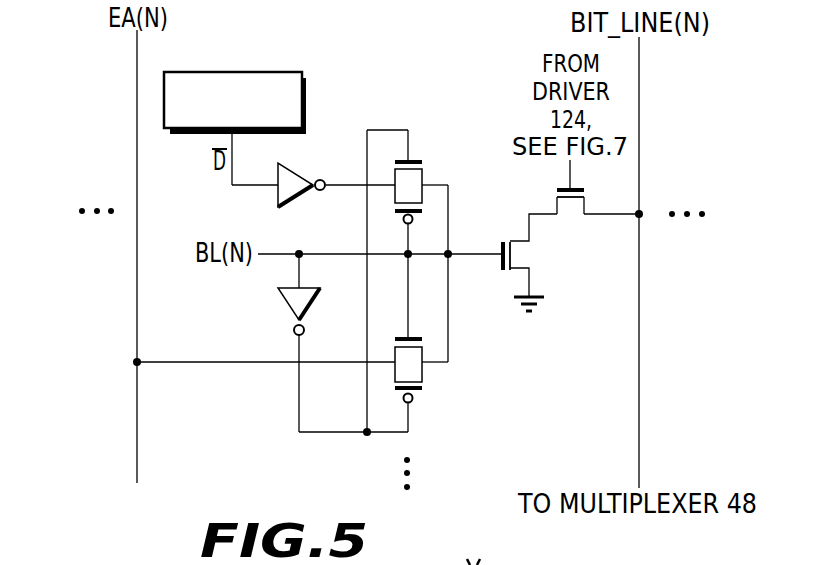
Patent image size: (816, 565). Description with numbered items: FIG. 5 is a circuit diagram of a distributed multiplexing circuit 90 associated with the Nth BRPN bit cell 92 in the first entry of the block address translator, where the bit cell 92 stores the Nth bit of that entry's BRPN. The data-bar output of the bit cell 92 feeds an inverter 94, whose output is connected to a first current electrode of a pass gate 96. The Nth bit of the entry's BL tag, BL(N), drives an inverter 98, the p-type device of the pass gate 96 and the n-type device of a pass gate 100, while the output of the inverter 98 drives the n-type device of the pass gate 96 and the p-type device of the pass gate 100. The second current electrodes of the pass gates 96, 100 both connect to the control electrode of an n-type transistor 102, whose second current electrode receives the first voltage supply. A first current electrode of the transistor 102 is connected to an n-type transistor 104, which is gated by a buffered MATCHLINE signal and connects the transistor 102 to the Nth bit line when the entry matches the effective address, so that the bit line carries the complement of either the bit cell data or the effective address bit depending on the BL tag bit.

The distributed multiplexing circuit 90 is at (314, 499).
The bit cell 92 is at (257, 72).
The inverter 94 is at (298, 201).
The pass gate 96 is at (413, 160).
The inverter 98 is at (310, 317).
The pass gate 100 is at (419, 391).
The n-type transistor 102 is at (502, 268).
The n-type transistor 104 is at (568, 212).